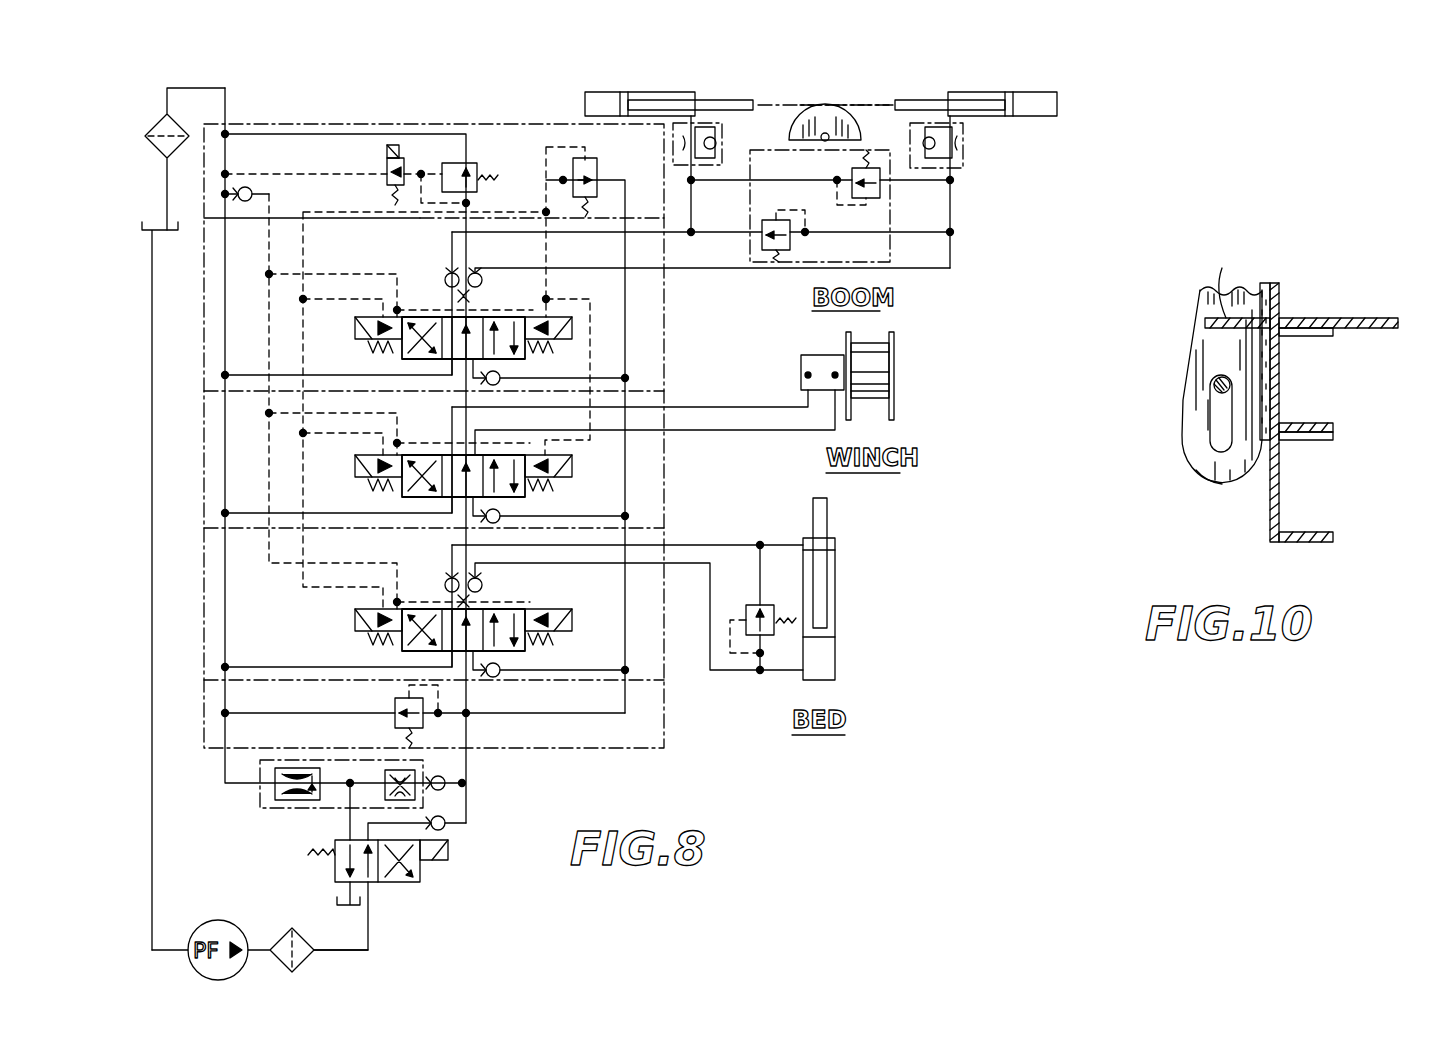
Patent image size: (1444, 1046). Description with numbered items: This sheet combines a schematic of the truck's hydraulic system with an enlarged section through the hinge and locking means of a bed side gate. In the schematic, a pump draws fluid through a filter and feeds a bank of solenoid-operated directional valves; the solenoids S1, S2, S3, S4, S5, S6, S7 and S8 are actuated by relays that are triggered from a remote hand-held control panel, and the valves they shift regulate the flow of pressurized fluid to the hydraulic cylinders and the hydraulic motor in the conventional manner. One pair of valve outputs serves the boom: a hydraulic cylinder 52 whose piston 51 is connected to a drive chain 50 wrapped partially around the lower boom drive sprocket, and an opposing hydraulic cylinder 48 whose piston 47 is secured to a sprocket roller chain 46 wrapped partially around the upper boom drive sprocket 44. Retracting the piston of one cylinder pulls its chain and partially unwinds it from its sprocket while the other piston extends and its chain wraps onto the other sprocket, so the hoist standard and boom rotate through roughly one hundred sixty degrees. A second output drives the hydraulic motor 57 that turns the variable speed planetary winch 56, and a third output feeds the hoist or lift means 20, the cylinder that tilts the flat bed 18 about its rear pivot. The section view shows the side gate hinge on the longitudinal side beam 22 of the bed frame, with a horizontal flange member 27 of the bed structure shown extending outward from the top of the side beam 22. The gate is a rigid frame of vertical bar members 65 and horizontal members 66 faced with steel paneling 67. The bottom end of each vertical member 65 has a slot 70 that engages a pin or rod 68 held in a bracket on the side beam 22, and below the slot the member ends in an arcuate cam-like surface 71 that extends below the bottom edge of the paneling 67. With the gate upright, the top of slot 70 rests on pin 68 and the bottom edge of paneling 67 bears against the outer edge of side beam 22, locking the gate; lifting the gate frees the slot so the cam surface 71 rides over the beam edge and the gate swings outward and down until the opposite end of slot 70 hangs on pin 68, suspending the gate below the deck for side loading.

In FIG. 8, the hydraulic cylinder 52 is at (586, 101).
In FIG. 8, the piston 51 is at (727, 99).
In FIG. 8, the drive chain 50 is at (788, 103).
In FIG. 8, the sprocket roller chain 46 is at (870, 103).
In FIG. 8, the piston 47 is at (924, 101).
In FIG. 8, the hydraulic cylinder 48 is at (1048, 120).
In FIG. 8, the upper boom drive sprocket 44 is at (787, 132).
In FIG. 8, the hydraulic motor 57 is at (797, 370).
In FIG. 8, the winch 56 is at (896, 360).
In FIG. 8, the hoist or lift means 20 is at (840, 662).
In FIG. 10, the longitudinal side beam 22 is at (1280, 382).
In FIG. 10, the paneling 67 is at (1277, 300).
In FIG. 10, the top rail 27 is at (1372, 316).
In FIG. 10, the tiltable flat bed 18 is at (1266, 504).
In FIG. 10, the vertical bar member 65 is at (1188, 356).
In FIG. 10, the horizontal member 66 is at (1219, 280).
In FIG. 10, the pin or rod 68 is at (1220, 400).
In FIG. 10, the slot 70 is at (1220, 440).
In FIG. 10, the arcuate cam-like surface 71 is at (1213, 485).
In FIG. 8, the solenoid S1 is at (442, 629).
In FIG. 8, the solenoid S2 is at (567, 623).
In FIG. 8, the solenoid S3 is at (442, 475).
In FIG. 8, the solenoid S4 is at (567, 469).
In FIG. 8, the solenoid S5 is at (442, 335).
In FIG. 8, the solenoid S6 is at (556, 343).
In FIG. 8, the solenoid S7 is at (400, 861).
In FIG. 8, the solenoid S8 is at (414, 171).